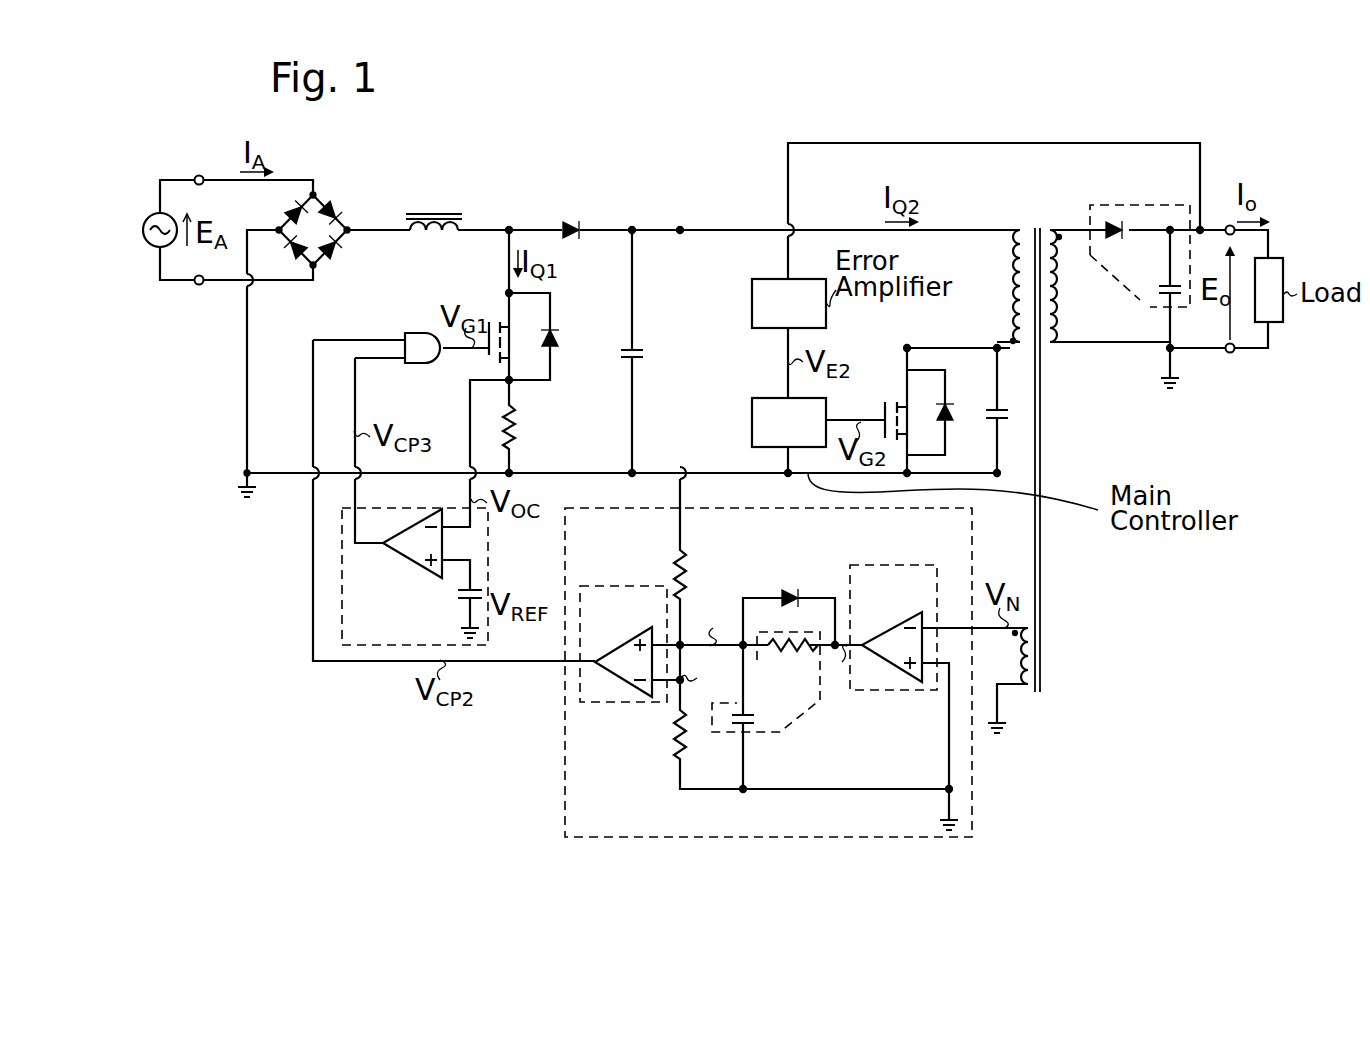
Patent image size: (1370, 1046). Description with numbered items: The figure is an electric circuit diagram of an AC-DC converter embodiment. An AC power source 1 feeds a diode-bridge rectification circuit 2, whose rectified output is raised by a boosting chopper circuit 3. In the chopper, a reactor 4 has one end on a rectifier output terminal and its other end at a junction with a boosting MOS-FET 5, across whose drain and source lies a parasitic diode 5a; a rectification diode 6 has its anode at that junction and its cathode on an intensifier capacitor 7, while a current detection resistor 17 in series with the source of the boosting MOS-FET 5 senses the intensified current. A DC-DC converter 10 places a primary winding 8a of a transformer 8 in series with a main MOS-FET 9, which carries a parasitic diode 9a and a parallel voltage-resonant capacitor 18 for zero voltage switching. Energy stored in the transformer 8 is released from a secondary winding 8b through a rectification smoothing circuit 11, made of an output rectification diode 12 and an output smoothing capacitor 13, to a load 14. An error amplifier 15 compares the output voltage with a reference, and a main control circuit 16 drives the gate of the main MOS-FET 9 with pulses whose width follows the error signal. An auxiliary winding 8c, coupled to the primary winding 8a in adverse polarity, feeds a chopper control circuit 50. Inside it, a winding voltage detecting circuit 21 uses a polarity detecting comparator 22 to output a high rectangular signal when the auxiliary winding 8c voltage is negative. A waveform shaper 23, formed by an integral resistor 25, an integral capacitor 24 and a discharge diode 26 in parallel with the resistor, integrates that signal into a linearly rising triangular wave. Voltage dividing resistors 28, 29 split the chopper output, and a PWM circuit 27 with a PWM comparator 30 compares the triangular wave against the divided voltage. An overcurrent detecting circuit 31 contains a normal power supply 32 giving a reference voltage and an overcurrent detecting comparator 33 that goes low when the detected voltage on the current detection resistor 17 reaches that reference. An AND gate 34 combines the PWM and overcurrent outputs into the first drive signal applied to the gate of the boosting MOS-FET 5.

The AC power source 1 is at (160, 211).
The rectification circuit 2 is at (340, 210).
The boosting chopper circuit 3 is at (509, 222).
The reactor 4 is at (432, 216).
The boosting MOS-FET 5 is at (493, 322).
The parasitic diode 5a is at (556, 336).
The rectification diode 6 is at (571, 224).
The intensifier capacitor 7 is at (642, 354).
The transformer 8 is at (1066, 446).
The primary winding 8a is at (1006, 331).
The secondary winding 8b is at (1058, 292).
The auxiliary winding 8c is at (1018, 694).
The main MOS-FET 9 is at (885, 402).
The parasitic diode 9a is at (947, 404).
The DC-DC converter 10 is at (752, 190).
The rectification smoothing circuit 11 is at (1145, 268).
The output rectification diode 12 is at (1116, 224).
The output smoothing capacitor 13 is at (1158, 298).
The load 14 is at (1272, 250).
The error amplifier 15 is at (752, 302).
The main control circuit 16 is at (752, 399).
The current detection resistor 17 is at (516, 430).
The voltage-resonant capacitor 18 is at (991, 422).
The winding voltage detecting circuit 21 is at (932, 655).
The polarity detecting comparator 22 is at (887, 616).
The waveform shaper 23 is at (783, 710).
The integral capacitor 24 is at (732, 723).
The integral resistor 25 is at (793, 662).
The discharge diode 26 is at (790, 599).
The PWM circuit 27 is at (630, 607).
The voltage dividing resistor 28 is at (684, 559).
The voltage dividing resistor 29 is at (672, 737).
The PWM comparator 30 is at (627, 642).
The overcurrent detecting circuit 31 is at (447, 561).
The normal power supply 32 is at (460, 598).
The overcurrent detecting comparator 33 is at (414, 531).
The AND gate 34 is at (424, 364).
The chopper control circuit 50 is at (562, 746).